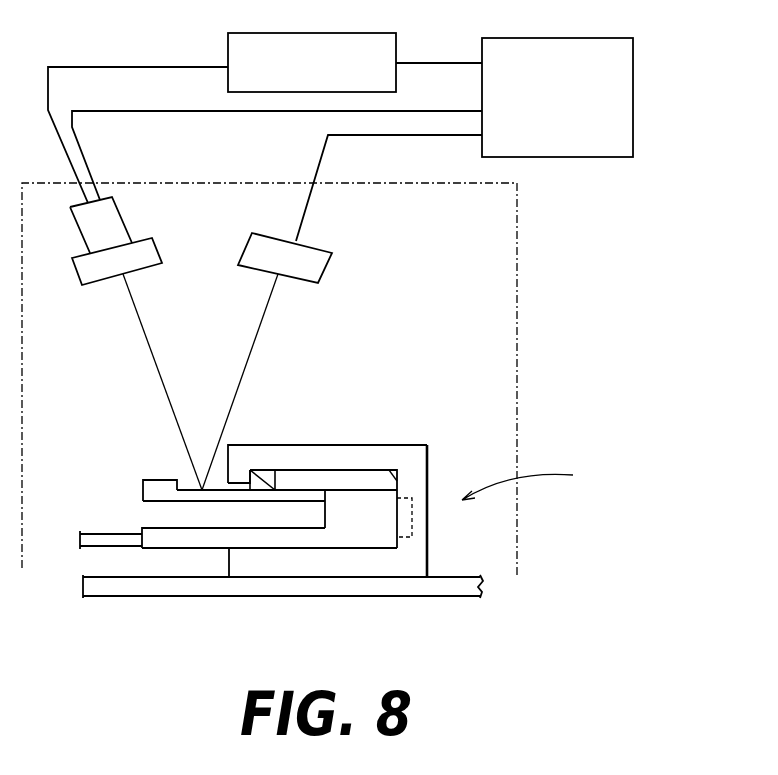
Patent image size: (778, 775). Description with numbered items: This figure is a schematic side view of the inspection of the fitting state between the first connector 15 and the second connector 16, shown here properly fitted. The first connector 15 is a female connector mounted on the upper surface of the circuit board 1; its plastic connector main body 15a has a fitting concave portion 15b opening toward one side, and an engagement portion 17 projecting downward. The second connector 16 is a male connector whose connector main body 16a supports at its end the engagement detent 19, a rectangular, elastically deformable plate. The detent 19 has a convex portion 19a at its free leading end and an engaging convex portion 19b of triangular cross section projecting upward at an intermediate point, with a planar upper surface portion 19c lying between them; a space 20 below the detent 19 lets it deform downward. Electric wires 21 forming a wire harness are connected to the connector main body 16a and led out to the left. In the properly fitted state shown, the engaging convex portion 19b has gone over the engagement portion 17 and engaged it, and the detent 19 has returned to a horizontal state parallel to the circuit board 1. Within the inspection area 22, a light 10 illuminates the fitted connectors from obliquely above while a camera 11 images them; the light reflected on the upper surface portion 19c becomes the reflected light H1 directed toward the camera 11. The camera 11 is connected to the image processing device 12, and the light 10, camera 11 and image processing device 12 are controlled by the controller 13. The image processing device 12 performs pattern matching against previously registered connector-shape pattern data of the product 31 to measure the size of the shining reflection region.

The circuit board 1 is at (458, 577).
The light 10 is at (323, 270).
The camera 11 is at (156, 248).
The image processing device 12 is at (320, 33).
The controller 13 is at (633, 77).
The first connector 15 is at (428, 446).
The connector main body 15a is at (430, 469).
The fitting concave portion 15b is at (383, 466).
The second connector 16 is at (163, 552).
The connector main body 16a is at (215, 543).
The engagement portion 17 is at (237, 470).
The engagement detent 19 is at (143, 488).
The convex portion 19a is at (157, 480).
The engaging convex portion 19b is at (270, 481).
The upper surface portion 19c is at (222, 492).
The space 20 is at (183, 515).
The electric wires 21 is at (97, 533).
The inspection area 22 is at (520, 372).
The product 31 is at (529, 485).
The reflected light H1 is at (156, 368).